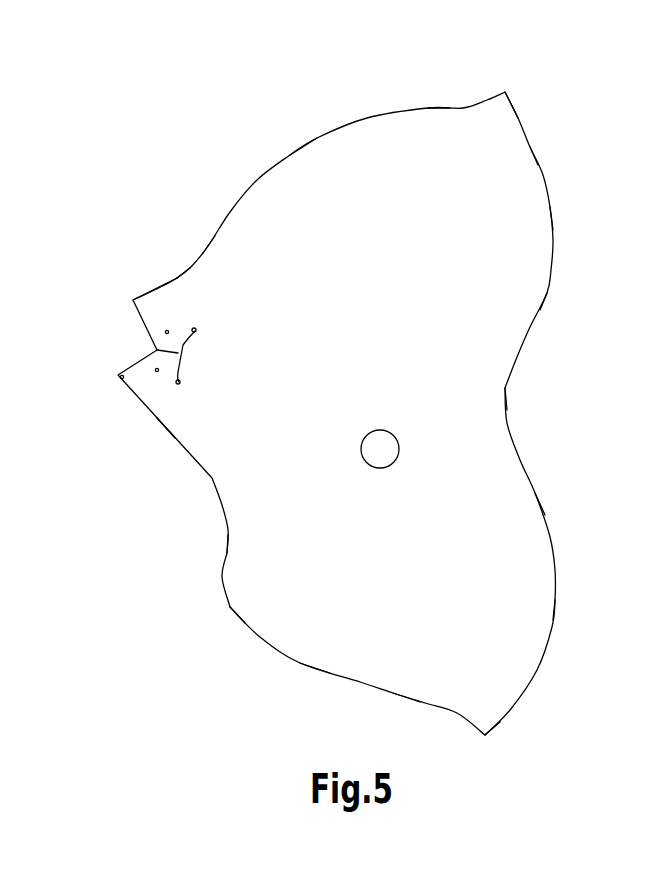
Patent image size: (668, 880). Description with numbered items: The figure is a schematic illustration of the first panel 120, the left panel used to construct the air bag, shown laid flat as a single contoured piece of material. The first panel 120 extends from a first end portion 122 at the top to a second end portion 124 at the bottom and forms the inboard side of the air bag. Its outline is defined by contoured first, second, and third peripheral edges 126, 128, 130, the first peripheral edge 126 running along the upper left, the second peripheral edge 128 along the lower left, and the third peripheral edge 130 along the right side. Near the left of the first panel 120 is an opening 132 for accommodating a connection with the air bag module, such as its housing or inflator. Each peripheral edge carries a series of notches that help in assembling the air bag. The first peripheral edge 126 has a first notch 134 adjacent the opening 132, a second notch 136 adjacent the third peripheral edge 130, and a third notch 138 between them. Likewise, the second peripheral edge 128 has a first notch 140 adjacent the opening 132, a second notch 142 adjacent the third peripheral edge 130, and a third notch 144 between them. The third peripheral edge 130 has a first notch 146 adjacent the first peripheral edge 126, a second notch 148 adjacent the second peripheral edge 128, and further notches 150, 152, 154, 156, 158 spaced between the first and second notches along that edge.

The first panel 120 is at (242, 138).
The first end portion 122 is at (377, 95).
The second end portion 124 is at (307, 683).
The first peripheral edge 126 is at (317, 138).
The second peripheral edge 128 is at (230, 608).
The third peripheral edge 130 is at (548, 295).
The opening 132 is at (137, 343).
The first notch 134 is at (177, 278).
The second notch 136 is at (428, 108).
The third notch 138 is at (203, 253).
The first notch 140 is at (157, 418).
The second notch 142 is at (393, 693).
The third notch 144 is at (227, 553).
The first notch 146 is at (510, 98).
The second notch 148 is at (487, 735).
The third notch 150 is at (531, 147).
The fourth notch 152 is at (550, 205).
The fifth notch 154 is at (505, 390).
The sixth notch 156 is at (535, 493).
The notch 158 is at (555, 600).